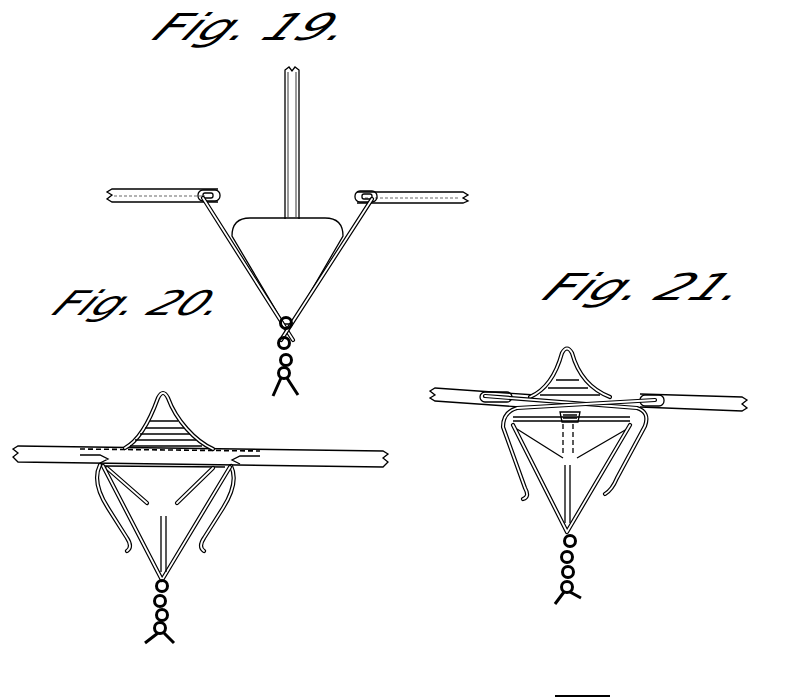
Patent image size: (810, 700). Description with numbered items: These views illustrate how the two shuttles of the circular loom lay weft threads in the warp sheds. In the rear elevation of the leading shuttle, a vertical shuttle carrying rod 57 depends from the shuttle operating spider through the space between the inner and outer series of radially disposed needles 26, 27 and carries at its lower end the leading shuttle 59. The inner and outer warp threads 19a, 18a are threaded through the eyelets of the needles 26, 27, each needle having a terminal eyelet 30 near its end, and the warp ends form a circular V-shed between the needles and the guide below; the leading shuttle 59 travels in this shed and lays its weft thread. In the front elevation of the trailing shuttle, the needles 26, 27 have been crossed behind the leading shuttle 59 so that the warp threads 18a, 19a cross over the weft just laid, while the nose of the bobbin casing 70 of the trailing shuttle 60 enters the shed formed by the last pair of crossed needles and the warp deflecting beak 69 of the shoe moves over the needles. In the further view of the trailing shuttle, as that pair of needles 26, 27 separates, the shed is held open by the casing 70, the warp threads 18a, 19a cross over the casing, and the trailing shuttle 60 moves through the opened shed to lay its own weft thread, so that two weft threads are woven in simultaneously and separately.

In FIG. 19, the needles 26 is at (151, 191).
In FIG. 20, the needles 26 is at (57, 446).
In FIG. 21, the needles 26 is at (456, 392).
In FIG. 19, the needles 27 is at (415, 192).
In FIG. 20, the needles 27 is at (340, 450).
In FIG. 21, the needles 27 is at (718, 395).
In FIG. 19, the terminal eyelet 30 is at (206, 190).
In FIG. 21, the terminal eyelet 30 is at (484, 405).
In FIG. 19, the warp thread 19a is at (222, 237).
In FIG. 20, the warp thread 19a is at (217, 507).
In FIG. 21, the warp thread 19a is at (508, 392).
In FIG. 19, the warp thread 18a is at (353, 236).
In FIG. 20, the warp thread 18a is at (116, 522).
In FIG. 21, the warp thread 18a is at (633, 393).
In FIG. 19, the shuttle carrying rod 57 is at (300, 129).
In FIG. 19, the leading shuttle 59 is at (297, 288).
In FIG. 20, the warp deflecting beak 69 is at (180, 413).
In FIG. 21, the warp deflecting beak 69 is at (583, 362).
In FIG. 20, the trailing shuttle 60 is at (158, 538).
In FIG. 21, the bobbin casing 70 is at (584, 490).